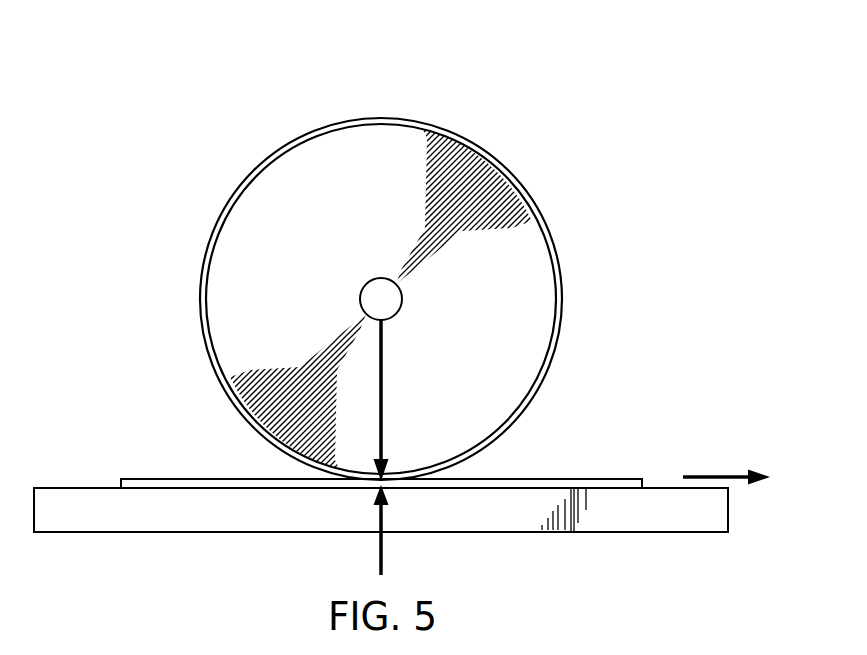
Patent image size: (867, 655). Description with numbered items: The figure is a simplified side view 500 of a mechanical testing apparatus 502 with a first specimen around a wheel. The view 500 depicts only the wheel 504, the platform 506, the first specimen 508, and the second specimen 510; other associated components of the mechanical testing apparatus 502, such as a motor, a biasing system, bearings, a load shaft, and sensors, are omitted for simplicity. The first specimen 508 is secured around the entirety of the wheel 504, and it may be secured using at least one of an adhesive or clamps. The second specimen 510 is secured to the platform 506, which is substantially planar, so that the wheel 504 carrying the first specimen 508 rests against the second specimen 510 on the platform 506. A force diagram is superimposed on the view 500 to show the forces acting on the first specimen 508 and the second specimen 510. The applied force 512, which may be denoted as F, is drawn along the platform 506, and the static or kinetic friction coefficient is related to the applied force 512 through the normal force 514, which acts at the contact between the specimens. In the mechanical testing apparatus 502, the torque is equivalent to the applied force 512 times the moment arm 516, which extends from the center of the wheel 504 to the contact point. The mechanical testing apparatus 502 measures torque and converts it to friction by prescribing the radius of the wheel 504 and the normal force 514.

The view 500 is at (66, 55).
The mechanical testing apparatus 502 is at (208, 124).
The wheel 504 is at (545, 298).
The platform 506 is at (78, 487).
The first specimen 508 is at (200, 300).
The second specimen 510 is at (208, 479).
The applied force 512 is at (718, 473).
The normal force 514 is at (384, 553).
The moment arm 516 is at (383, 383).